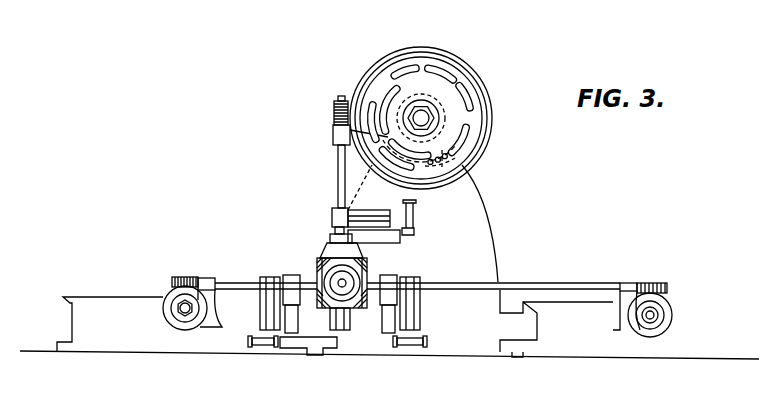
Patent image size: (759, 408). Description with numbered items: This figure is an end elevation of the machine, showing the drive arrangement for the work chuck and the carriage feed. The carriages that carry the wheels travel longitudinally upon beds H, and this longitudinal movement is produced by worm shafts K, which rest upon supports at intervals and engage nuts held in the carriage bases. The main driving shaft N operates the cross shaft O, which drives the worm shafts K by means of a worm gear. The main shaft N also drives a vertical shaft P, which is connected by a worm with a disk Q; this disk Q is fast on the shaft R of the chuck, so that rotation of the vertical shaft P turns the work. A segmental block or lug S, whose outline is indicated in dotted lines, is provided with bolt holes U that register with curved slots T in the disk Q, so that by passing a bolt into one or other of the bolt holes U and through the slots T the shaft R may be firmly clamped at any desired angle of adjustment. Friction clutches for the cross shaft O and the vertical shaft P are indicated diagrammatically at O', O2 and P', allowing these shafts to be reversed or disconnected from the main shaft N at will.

The bed H is at (335, 323).
The worm shaft K is at (178, 303).
The cross shaft O is at (493, 275).
The friction clutch O2 is at (308, 280).
The friction clutch O' is at (421, 269).
The main driving shaft N is at (336, 284).
The vertical shaft P is at (342, 161).
The friction clutch P' is at (381, 232).
The disk Q is at (364, 73).
The shaft of the chuck R is at (421, 118).
The segmental block S is at (458, 163).
The curved slot T is at (466, 128).
The bolt hole U is at (442, 167).